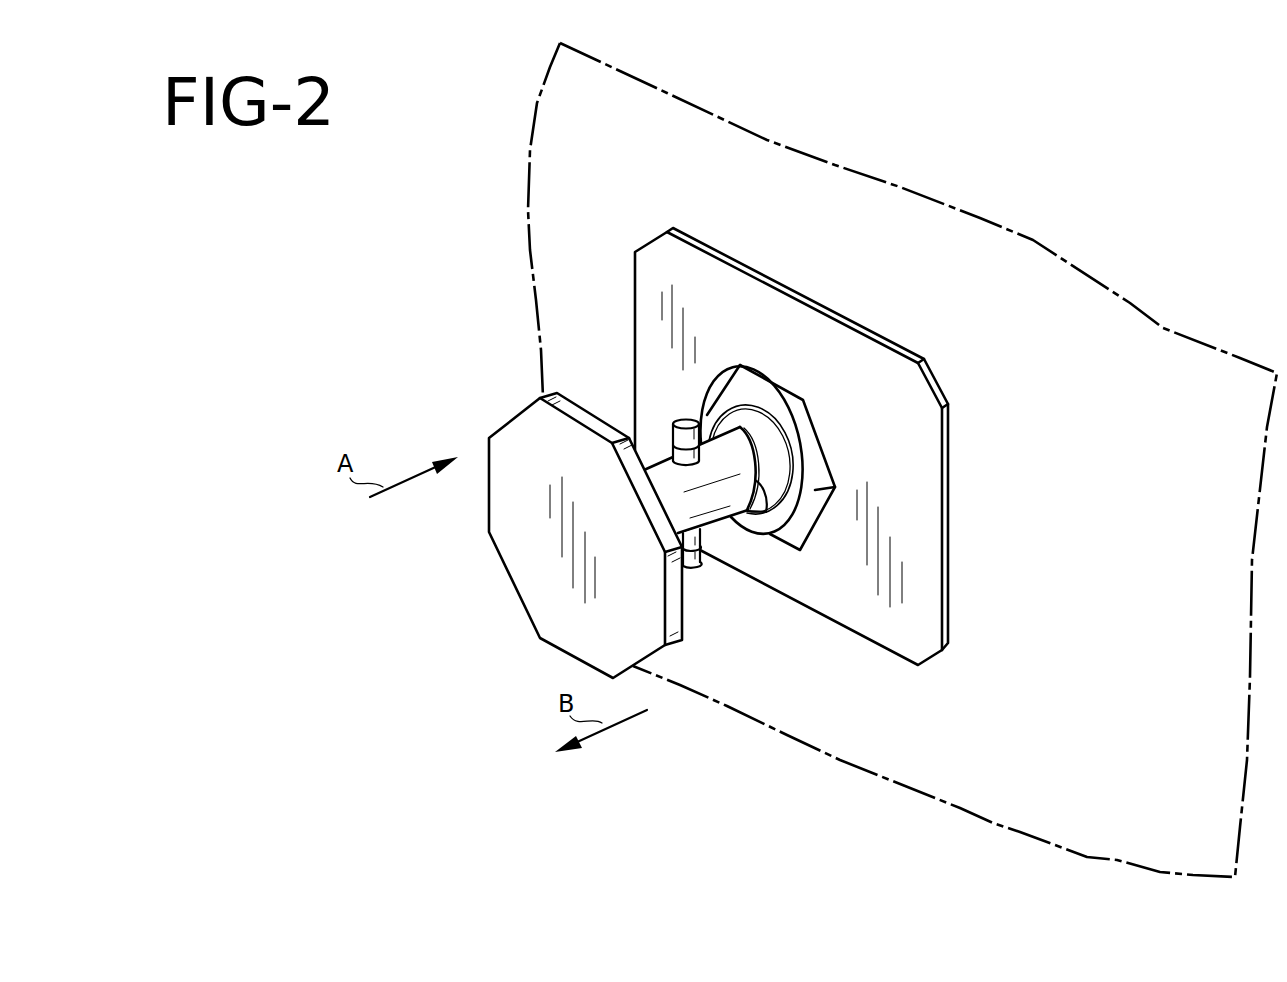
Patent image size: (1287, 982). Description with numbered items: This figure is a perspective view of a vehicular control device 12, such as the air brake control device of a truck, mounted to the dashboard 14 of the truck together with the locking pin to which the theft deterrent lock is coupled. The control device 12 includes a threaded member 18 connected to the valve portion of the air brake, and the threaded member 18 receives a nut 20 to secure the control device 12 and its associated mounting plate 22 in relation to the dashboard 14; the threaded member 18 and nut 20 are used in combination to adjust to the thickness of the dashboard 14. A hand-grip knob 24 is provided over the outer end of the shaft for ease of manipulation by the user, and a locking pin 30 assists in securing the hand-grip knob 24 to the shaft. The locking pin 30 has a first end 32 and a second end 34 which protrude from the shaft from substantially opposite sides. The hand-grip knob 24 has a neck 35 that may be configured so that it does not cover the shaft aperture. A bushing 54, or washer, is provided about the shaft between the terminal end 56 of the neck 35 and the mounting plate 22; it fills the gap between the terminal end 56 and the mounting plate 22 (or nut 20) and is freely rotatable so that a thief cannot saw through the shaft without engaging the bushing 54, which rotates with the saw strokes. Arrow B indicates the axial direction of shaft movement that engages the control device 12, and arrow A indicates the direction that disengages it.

The vehicular control device 12 is at (402, 653).
The dashboard 14 is at (1033, 240).
The threaded member 18 is at (805, 528).
The nut 20 is at (758, 377).
The mounting plate 22 is at (657, 270).
The hand-grip knob 24 is at (538, 565).
The locking pin 30 is at (683, 452).
The first end of locking pin 32 is at (678, 440).
The second end of locking pin 34 is at (697, 568).
The neck 35 is at (703, 500).
The bushing 54 is at (763, 468).
The terminal end 56 is at (762, 520).